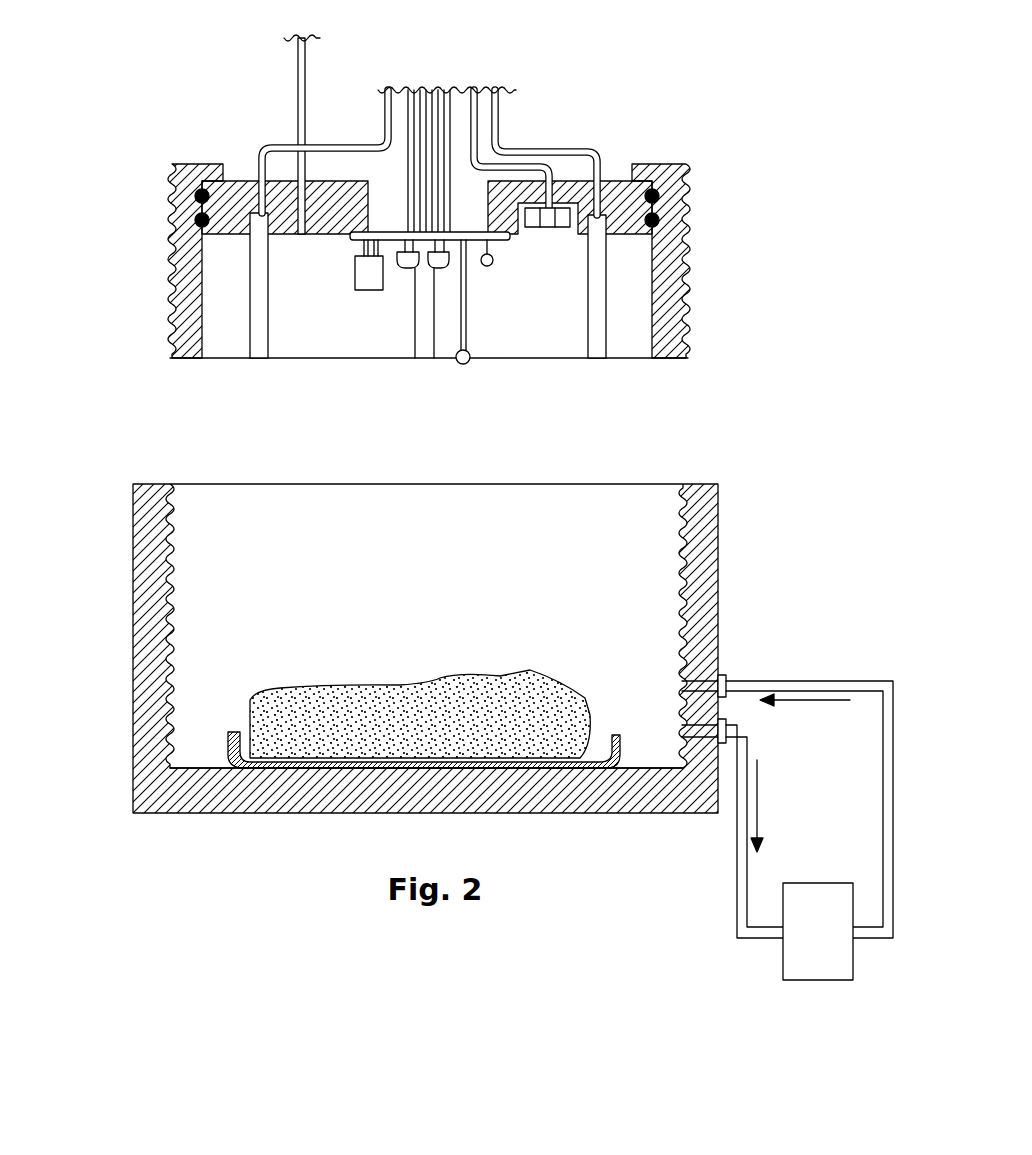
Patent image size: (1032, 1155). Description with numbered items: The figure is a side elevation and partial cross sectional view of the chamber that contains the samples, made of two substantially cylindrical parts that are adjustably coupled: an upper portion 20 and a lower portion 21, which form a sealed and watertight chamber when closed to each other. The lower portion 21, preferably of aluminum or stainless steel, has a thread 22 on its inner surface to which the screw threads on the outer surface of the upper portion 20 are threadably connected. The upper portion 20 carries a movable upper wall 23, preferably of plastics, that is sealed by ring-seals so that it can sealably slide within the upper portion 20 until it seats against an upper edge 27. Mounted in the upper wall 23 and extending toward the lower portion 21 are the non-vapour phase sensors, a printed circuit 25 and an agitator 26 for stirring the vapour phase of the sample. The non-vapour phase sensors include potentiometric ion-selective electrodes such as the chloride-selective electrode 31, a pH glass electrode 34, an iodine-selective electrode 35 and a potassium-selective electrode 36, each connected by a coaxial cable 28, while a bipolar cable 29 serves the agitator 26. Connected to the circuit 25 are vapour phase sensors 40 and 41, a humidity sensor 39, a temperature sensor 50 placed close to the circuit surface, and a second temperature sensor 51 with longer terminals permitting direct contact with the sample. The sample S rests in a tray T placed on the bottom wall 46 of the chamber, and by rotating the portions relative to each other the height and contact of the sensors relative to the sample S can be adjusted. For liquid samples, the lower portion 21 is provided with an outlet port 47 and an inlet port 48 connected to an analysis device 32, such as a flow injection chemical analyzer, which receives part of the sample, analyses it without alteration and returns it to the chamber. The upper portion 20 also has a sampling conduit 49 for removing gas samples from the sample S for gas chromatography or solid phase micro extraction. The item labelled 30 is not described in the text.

The upper portion 20 is at (743, 93).
The lower portion 21 is at (781, 489).
The thread 22 is at (185, 640).
The upper wall 23 is at (246, 181).
The circuit 25 is at (350, 238).
The agitator 26 is at (547, 230).
The upper edge 27 is at (193, 164).
The coaxial cable 28 is at (382, 127).
The bipolar cable 29 is at (477, 100).
The cable bundle 30 is at (438, 108).
The ion-selective electrode with higher selectivity to chloride 31 is at (172, 262).
The analysis device 32 is at (818, 931).
The pH glass electrode 34 is at (600, 355).
The ion-selective electrode with higher selectivity to iodine 35 is at (425, 348).
The ion-selective electrode with higher selectivity to potassium 36 is at (260, 348).
The humidity sensor 39 is at (365, 290).
The vapour phase sensor TGS 825 40 is at (405, 268).
The vapour phase sensor TGS 832 41 is at (443, 268).
The bottom wall 46 is at (180, 804).
The outlet port 47 is at (727, 718).
The inlet port 48 is at (722, 676).
The sampling conduit 49 is at (296, 107).
The temperature sensor 50 is at (490, 267).
The temperature sensor 51 is at (463, 364).
The sample S is at (397, 688).
The tray T is at (228, 748).